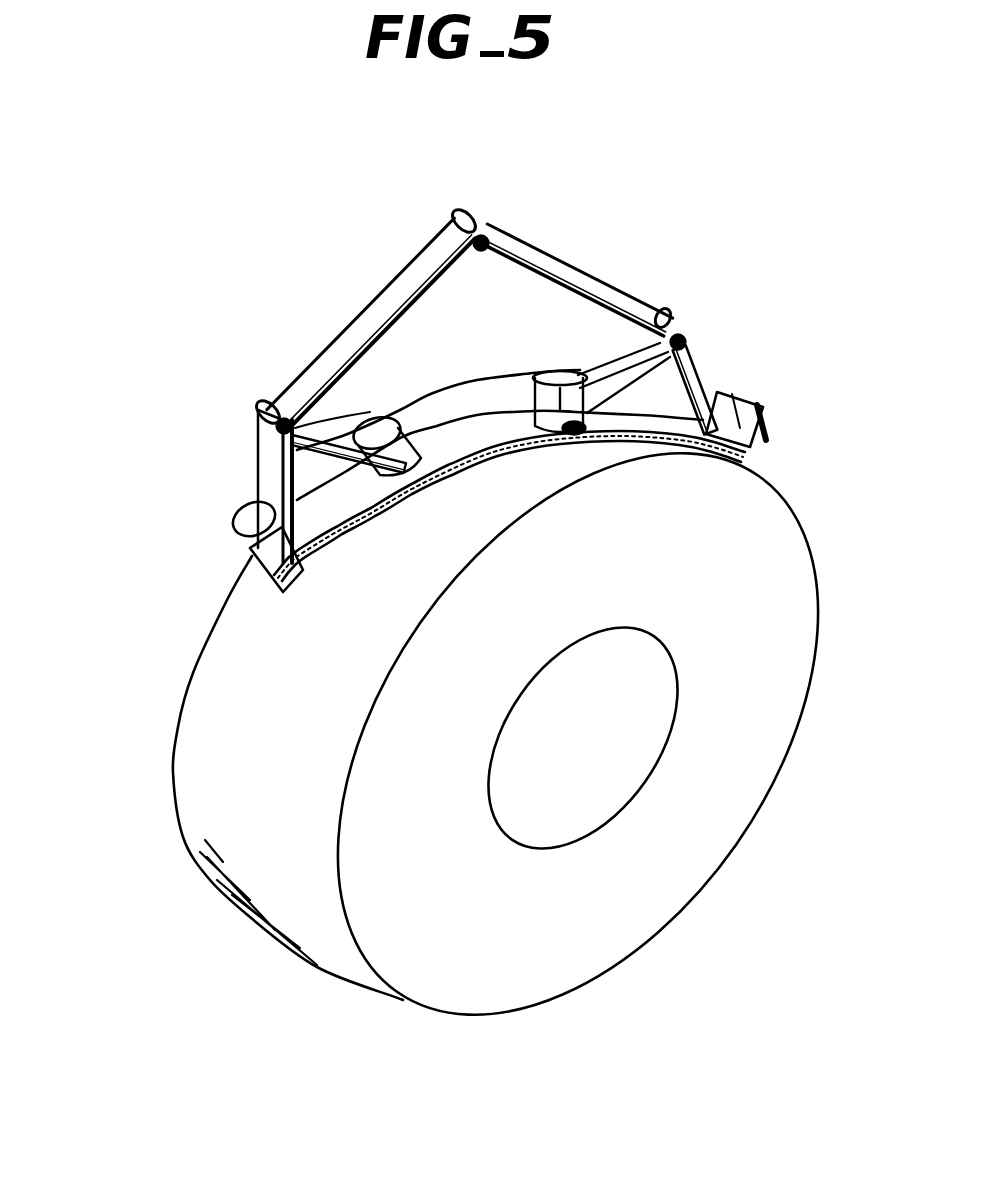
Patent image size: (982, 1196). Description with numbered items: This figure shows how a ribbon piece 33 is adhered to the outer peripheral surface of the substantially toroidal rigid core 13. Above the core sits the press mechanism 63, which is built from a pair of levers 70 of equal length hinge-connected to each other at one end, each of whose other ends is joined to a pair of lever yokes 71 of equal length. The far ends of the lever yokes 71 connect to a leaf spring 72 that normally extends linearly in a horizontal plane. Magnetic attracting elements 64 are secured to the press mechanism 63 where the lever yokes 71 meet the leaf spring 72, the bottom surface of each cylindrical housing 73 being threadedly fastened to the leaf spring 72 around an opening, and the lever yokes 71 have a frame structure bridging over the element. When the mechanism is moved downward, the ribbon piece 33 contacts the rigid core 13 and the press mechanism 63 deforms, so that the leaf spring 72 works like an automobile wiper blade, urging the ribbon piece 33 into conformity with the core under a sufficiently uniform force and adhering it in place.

The rigid core 13 is at (223, 733).
The ribbon piece 33 is at (293, 583).
The press mechanism 63 is at (469, 289).
The magnetic attracting element 64 is at (232, 494).
The lever 70 is at (392, 287).
The lever yoke 71 is at (257, 462).
The leaf spring 72 is at (483, 438).
The cylindrical housing 73 is at (247, 547).